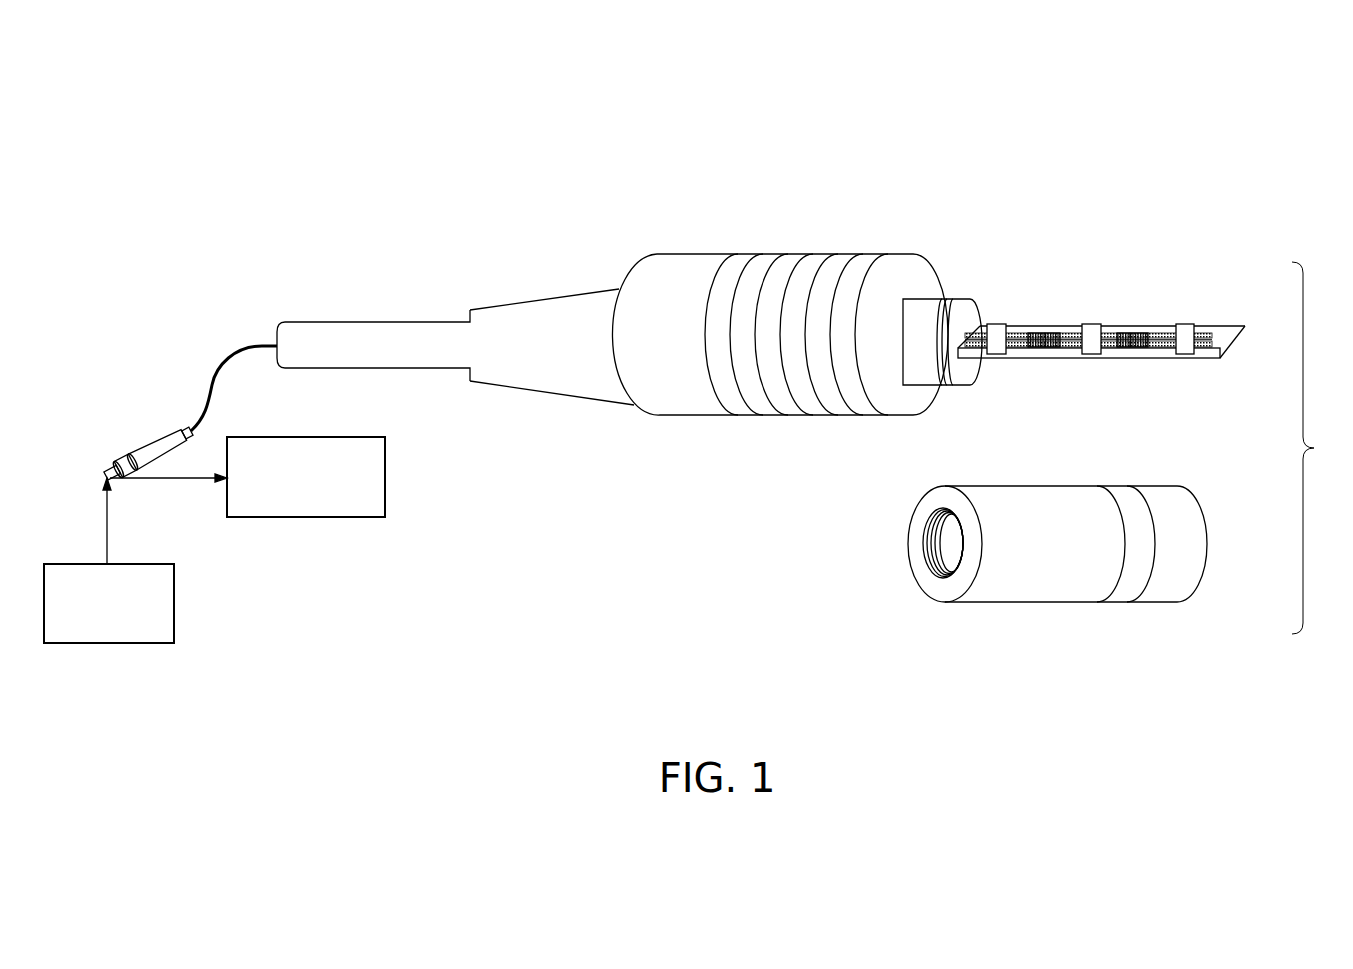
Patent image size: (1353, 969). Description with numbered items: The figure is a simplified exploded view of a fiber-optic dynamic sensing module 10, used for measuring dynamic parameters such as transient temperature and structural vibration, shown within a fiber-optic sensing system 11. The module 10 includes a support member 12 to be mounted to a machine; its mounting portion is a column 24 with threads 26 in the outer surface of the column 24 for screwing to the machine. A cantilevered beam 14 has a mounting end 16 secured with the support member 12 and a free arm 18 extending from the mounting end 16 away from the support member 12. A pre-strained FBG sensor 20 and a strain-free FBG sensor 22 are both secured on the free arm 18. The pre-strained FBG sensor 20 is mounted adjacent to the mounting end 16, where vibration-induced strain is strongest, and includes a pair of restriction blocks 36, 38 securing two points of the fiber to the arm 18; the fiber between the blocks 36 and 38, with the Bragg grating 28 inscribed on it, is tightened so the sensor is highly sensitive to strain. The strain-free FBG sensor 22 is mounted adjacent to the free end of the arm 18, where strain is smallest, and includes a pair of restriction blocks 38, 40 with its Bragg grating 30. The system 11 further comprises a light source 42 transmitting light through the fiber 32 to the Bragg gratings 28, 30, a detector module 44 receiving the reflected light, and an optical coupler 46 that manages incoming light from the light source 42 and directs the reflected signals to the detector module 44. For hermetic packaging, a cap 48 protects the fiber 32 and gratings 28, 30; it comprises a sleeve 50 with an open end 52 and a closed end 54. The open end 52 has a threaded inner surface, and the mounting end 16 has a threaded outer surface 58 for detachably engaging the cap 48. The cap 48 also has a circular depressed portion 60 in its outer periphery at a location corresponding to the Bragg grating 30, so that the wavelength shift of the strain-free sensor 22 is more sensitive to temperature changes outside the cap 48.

The fiber-optic dynamic sensing module 10 is at (1321, 448).
The fiber-optic sensing system 11 is at (1205, 112).
The support member 12 is at (886, 408).
The cantilevered beam 14 is at (1027, 330).
The mounting end 16 is at (930, 310).
The free arm 18 is at (1228, 328).
The pre-strained FBG sensor 20 is at (1054, 333).
The strain-free FBG sensor 22 is at (1148, 333).
The column 24 is at (690, 399).
The threads 26 is at (801, 262).
The Bragg grating 28 is at (1037, 348).
The Bragg grating 30 is at (1125, 348).
The fiber 32 is at (1165, 348).
The restriction block 36 is at (997, 326).
The restriction block 38 is at (1092, 326).
The restriction block 40 is at (1186, 326).
The light source 42 is at (174, 600).
The detector module 44 is at (385, 470).
The optical coupler 46 is at (150, 447).
The cap 48 is at (1006, 617).
The sleeve 50 is at (1188, 588).
The open end 52 is at (918, 560).
The closed end 54 is at (1207, 565).
The threaded outer surface 58 is at (941, 386).
The circular depressed portion 60 is at (1125, 588).